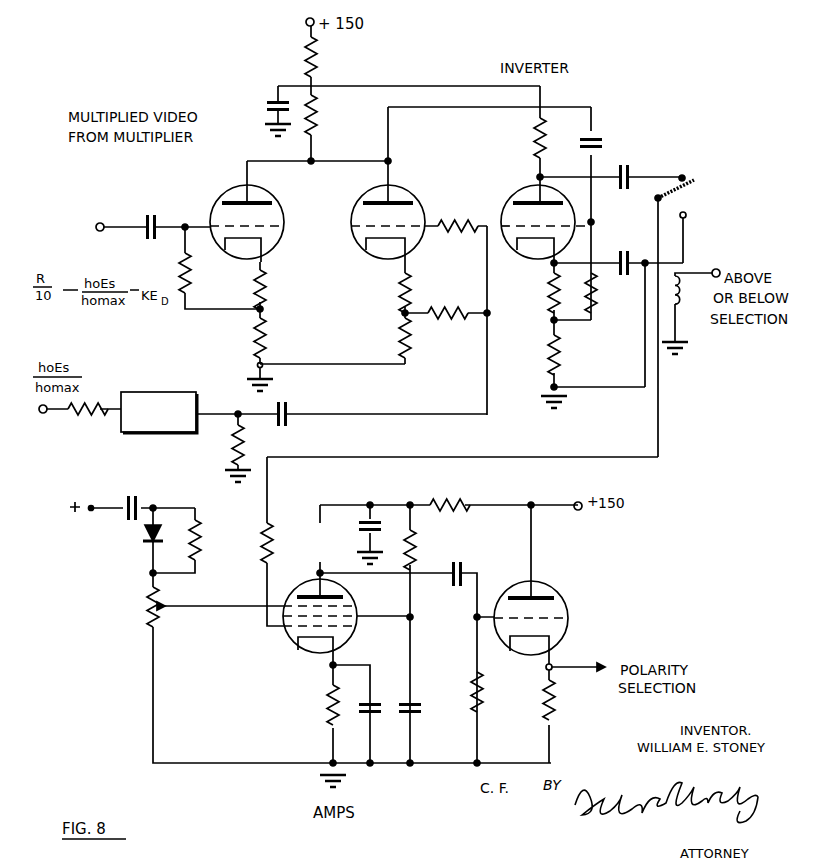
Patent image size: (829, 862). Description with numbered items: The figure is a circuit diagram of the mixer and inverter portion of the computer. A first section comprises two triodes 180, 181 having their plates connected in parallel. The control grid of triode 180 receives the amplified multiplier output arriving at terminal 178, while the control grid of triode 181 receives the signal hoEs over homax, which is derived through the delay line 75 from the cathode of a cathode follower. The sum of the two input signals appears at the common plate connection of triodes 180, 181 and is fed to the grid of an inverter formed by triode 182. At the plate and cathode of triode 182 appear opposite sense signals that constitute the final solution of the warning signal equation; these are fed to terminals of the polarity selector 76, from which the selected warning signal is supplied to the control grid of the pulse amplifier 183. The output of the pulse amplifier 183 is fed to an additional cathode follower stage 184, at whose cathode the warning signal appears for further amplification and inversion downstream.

The terminal 178 is at (103, 224).
The triode 180 is at (276, 205).
The triode 181 is at (407, 190).
The triode 182 is at (511, 199).
The polarity selector 76 is at (684, 193).
The delay line 75 is at (145, 398).
The pulse amplifier 183 is at (313, 664).
The cathode follower stage 184 is at (553, 586).